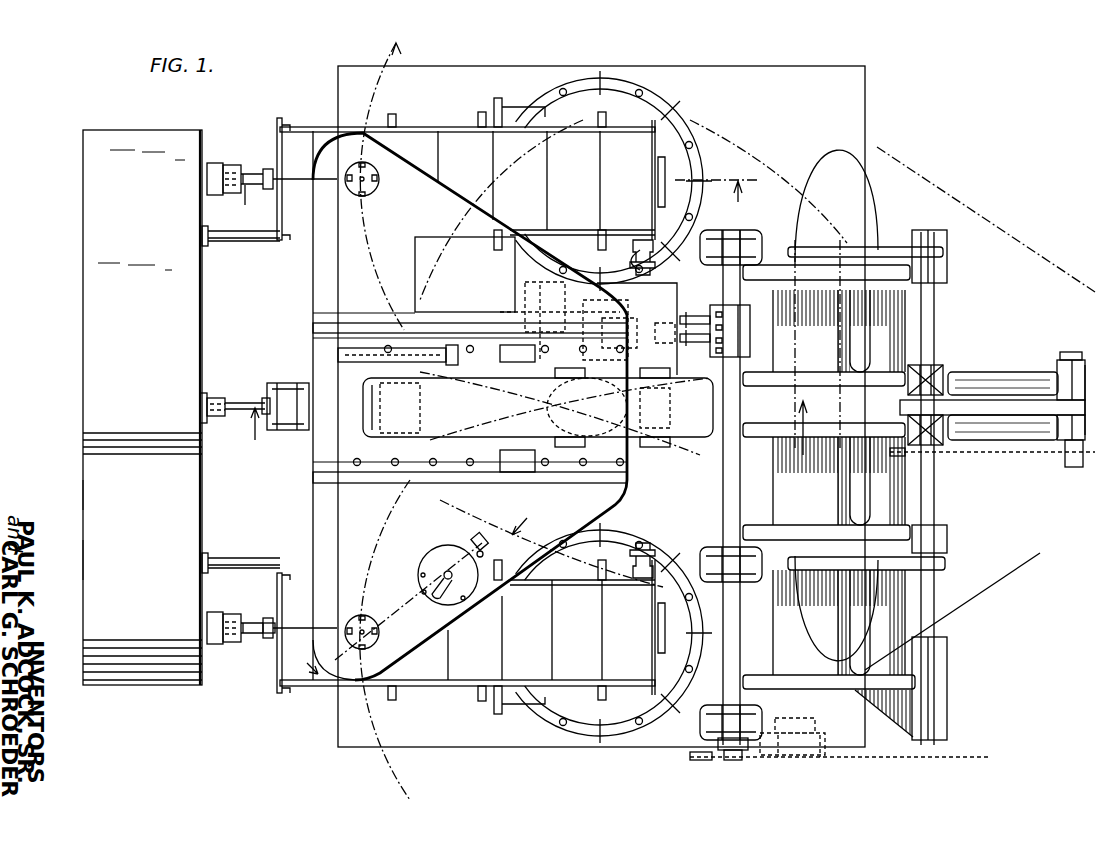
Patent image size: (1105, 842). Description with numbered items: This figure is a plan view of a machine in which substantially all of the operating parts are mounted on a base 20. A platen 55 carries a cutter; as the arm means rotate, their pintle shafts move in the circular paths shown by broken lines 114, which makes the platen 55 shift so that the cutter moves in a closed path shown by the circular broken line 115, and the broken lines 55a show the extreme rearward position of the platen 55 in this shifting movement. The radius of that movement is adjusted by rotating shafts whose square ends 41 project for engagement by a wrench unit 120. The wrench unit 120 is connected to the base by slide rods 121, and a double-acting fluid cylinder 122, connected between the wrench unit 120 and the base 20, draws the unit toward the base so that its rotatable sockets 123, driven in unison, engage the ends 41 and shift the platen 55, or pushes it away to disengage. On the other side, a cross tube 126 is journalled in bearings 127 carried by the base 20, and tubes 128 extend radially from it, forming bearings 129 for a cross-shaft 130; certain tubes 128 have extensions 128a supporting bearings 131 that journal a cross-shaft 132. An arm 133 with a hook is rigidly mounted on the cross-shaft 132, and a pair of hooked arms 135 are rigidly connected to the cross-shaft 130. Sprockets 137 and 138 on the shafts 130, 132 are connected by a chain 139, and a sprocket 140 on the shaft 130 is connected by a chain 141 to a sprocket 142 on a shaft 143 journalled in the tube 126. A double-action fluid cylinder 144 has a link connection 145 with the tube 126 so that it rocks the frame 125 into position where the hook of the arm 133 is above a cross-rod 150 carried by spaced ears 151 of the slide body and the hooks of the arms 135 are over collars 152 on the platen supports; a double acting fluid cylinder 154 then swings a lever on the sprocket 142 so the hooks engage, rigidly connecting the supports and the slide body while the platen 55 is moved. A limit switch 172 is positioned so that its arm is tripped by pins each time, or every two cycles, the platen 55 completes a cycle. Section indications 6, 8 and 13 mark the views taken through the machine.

The base 20 is at (560, 66).
The wrench unit 120 is at (83, 339).
The slide rods 121 is at (248, 245).
The double-acting fluid cylinder 122 is at (288, 385).
The rotatable sockets 123 is at (228, 165).
The square end 41 is at (262, 622).
The platen 55 is at (305, 304).
The broken lines showing extreme rearward position of the platen 55a is at (986, 219).
The circular broken line showing cutter path 115 is at (432, 232).
The broken lines showing pintle-shaft paths 114 is at (394, 50).
The fluid cylinder 144 is at (575, 283).
The link connection 145 is at (694, 312).
The cross-rod 150 is at (538, 405).
The spaced ears 151 is at (660, 446).
The collars 152 is at (640, 238).
The limit switch 172 is at (483, 530).
The cross tube 126 is at (722, 486).
The bearings 127 is at (762, 236).
The tubes 128 is at (880, 262).
The extensions 128a is at (990, 400).
The bearings 129 is at (945, 272).
The cross-shaft 130 is at (938, 312).
The bearings 131 is at (1078, 360).
The cross-shaft 132 is at (1070, 470).
The arm 133 is at (990, 372).
The arms 135 is at (850, 250).
The sprocket 137 is at (992, 469).
The sprocket 138 is at (980, 605).
The chain 139 is at (1010, 455).
The frame 125 is at (960, 542).
The sprocket 140 is at (965, 755).
The chain 141 is at (872, 760).
The sprocket 142 is at (705, 760).
The shaft 143 is at (735, 760).
The double acting fluid cylinder 154 is at (808, 758).
The section line 6- 6 is at (499, 205).
The section line 8- 8 is at (529, 440).
The section line 13- 13 is at (422, 596).